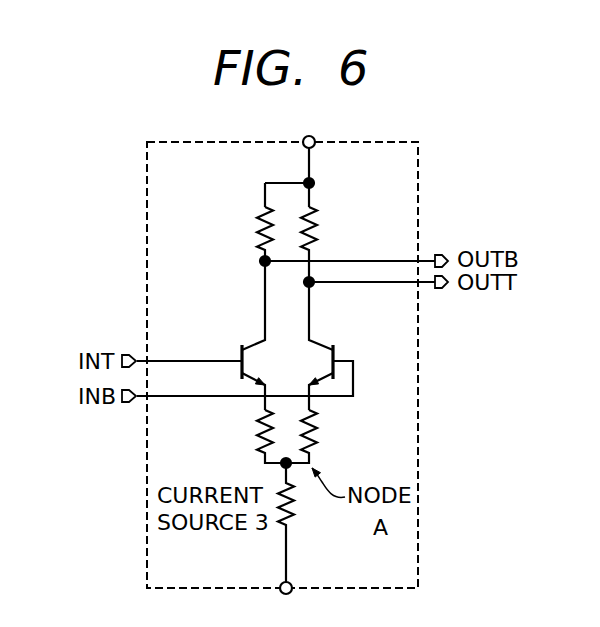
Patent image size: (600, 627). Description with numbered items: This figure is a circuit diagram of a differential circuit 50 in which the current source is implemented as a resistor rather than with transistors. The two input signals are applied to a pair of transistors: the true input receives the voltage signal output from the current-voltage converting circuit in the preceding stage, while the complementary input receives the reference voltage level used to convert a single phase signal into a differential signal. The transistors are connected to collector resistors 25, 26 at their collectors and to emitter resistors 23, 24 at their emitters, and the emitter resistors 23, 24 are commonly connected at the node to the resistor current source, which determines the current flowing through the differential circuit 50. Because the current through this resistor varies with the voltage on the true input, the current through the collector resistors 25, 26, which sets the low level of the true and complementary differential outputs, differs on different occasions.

The emitter resistor 23 is at (258, 445).
The emitter resistor 24 is at (318, 440).
The collector resistor 25 is at (258, 233).
The collector resistor 26 is at (318, 228).
The differential circuit 50 is at (147, 562).